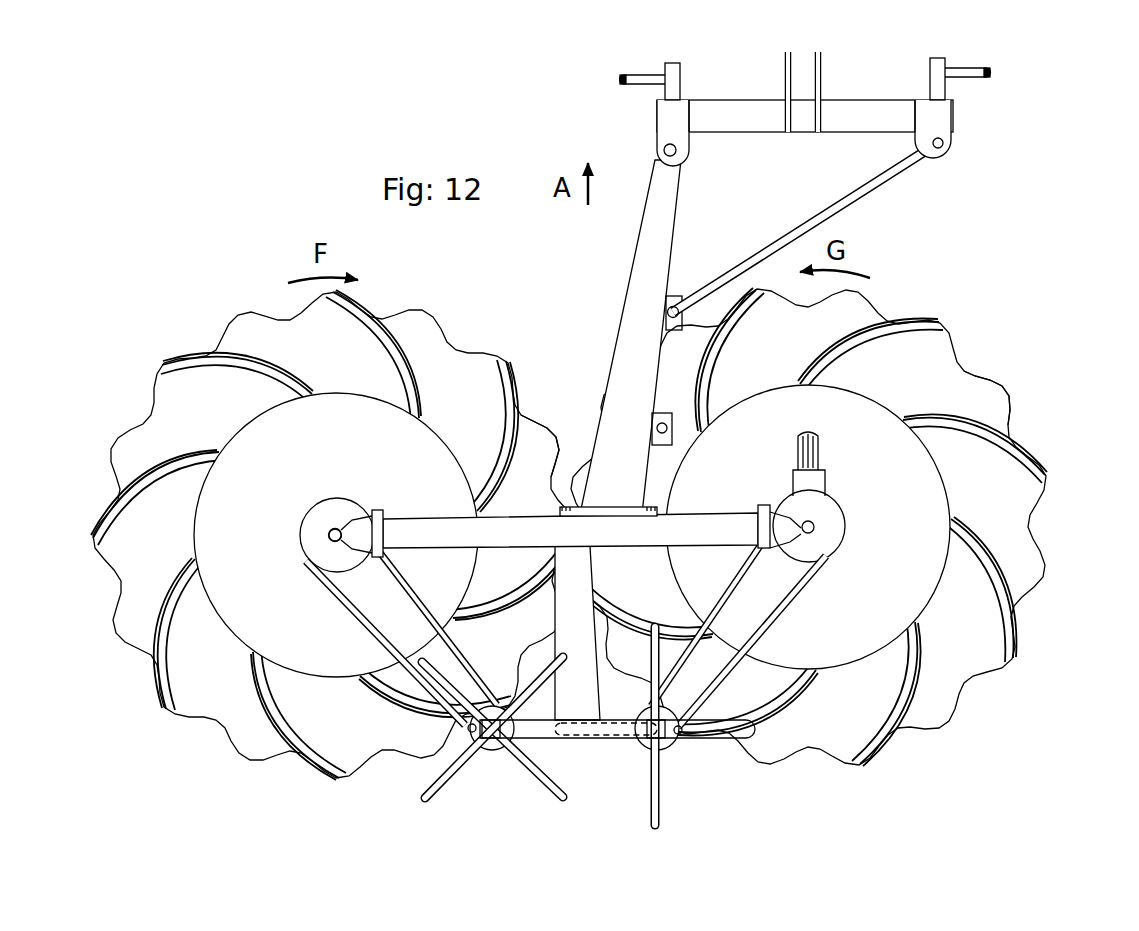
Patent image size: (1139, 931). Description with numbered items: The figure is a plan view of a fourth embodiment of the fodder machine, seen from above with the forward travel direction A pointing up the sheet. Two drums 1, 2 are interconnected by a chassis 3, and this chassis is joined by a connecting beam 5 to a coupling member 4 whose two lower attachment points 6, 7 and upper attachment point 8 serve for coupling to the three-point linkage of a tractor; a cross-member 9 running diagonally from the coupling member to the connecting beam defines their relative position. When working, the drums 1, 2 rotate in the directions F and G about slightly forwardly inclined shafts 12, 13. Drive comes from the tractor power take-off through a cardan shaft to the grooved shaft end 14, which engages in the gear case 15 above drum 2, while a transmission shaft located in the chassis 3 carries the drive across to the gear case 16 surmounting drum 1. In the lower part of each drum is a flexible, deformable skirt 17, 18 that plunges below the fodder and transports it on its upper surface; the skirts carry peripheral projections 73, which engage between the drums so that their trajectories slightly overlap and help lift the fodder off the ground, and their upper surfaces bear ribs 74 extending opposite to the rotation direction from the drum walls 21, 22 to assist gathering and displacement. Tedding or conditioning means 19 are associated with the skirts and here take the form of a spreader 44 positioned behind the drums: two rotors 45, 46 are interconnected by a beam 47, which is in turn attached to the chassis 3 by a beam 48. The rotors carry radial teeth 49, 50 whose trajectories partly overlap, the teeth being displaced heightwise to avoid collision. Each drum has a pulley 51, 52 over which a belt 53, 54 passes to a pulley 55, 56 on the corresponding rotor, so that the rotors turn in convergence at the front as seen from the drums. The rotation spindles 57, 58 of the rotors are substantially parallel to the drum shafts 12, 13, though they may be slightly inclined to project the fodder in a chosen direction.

The drum 1 is at (336, 533).
The drum 2 is at (807, 527).
The chassis 3 is at (513, 527).
The coupling member 4 is at (750, 120).
The connecting beam 5 is at (647, 247).
The lower attachment point 6 is at (643, 80).
The lower attachment point 7 is at (972, 77).
The upper attachment point 8 is at (822, 65).
The cross-member 9 is at (845, 200).
The shaft 12 is at (332, 530).
The shaft 13 is at (804, 521).
The grooved shaft end 14 is at (797, 438).
The gear case 15 is at (837, 524).
The gear case 16 is at (315, 536).
The skirt 17 is at (213, 695).
The skirt 18 is at (948, 667).
The tedding or conditioning means 19 is at (433, 768).
The wall 21 is at (195, 543).
The wall 22 is at (950, 505).
The spreader 44 is at (628, 748).
The rotor 45 is at (482, 756).
The rotor 46 is at (648, 754).
The beam 47 is at (552, 722).
The beam 48 is at (556, 617).
The radial teeth 49 is at (438, 780).
The radial teeth 50 is at (662, 810).
The pulley 51 is at (305, 560).
The pulley 52 is at (843, 550).
The belt 53 is at (353, 610).
The belt 54 is at (798, 597).
The pulley 55 is at (503, 700).
The pulley 56 is at (681, 742).
The rotation spindle 57 is at (467, 726).
The rotation spindle 58 is at (660, 720).
The projection 73 is at (542, 437).
The rib 74 is at (508, 377).